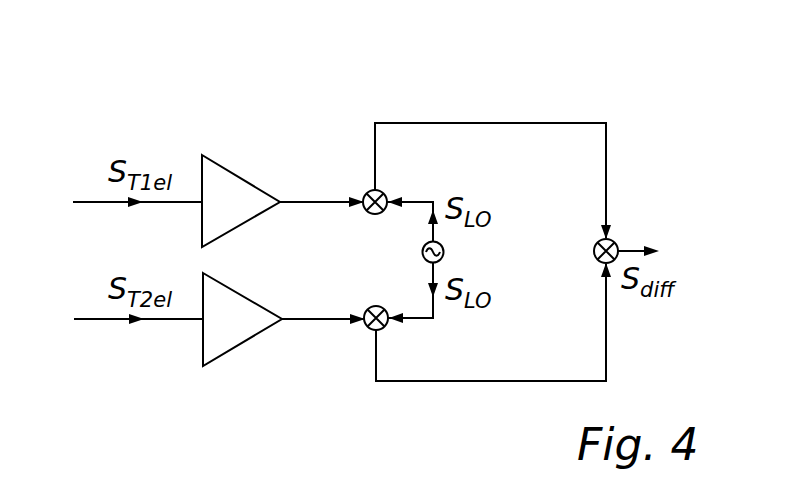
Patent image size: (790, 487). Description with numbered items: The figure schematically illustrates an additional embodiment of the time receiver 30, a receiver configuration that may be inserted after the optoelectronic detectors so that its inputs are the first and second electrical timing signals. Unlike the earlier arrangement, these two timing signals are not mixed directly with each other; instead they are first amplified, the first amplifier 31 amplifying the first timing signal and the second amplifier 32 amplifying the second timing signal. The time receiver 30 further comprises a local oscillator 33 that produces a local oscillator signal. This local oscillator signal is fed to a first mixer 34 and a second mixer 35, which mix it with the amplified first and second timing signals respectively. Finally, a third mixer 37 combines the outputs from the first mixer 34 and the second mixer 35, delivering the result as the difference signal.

The time receiver 30 is at (529, 81).
The first amplifier 31 is at (240, 170).
The second amplifier 32 is at (240, 343).
The local oscillator 33 is at (444, 252).
The first mixer 34 is at (378, 190).
The second mixer 35 is at (385, 326).
The third mixer 37 is at (617, 243).